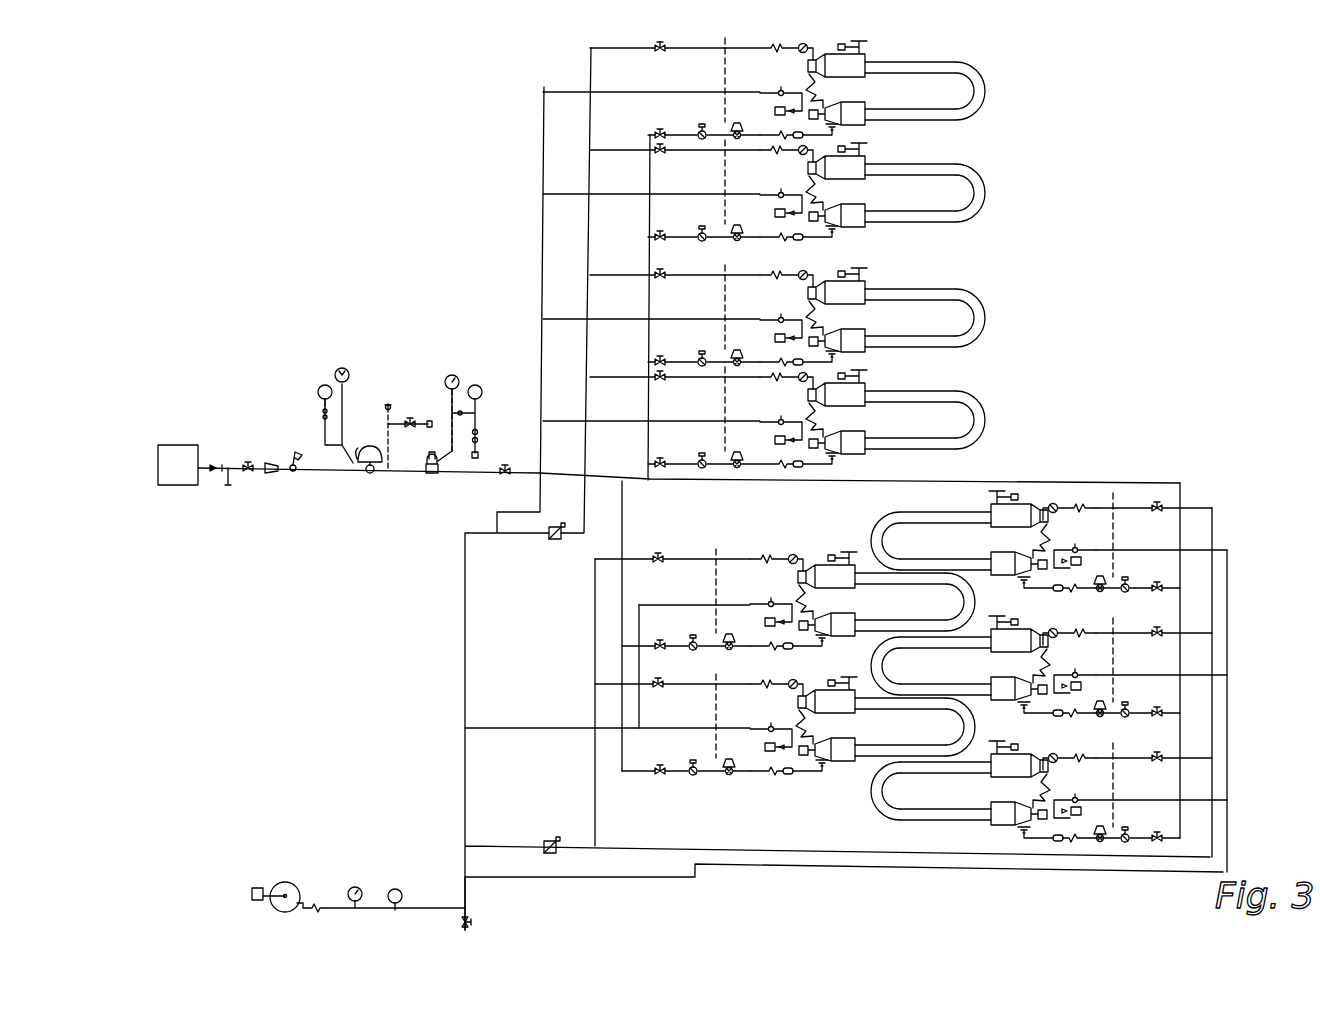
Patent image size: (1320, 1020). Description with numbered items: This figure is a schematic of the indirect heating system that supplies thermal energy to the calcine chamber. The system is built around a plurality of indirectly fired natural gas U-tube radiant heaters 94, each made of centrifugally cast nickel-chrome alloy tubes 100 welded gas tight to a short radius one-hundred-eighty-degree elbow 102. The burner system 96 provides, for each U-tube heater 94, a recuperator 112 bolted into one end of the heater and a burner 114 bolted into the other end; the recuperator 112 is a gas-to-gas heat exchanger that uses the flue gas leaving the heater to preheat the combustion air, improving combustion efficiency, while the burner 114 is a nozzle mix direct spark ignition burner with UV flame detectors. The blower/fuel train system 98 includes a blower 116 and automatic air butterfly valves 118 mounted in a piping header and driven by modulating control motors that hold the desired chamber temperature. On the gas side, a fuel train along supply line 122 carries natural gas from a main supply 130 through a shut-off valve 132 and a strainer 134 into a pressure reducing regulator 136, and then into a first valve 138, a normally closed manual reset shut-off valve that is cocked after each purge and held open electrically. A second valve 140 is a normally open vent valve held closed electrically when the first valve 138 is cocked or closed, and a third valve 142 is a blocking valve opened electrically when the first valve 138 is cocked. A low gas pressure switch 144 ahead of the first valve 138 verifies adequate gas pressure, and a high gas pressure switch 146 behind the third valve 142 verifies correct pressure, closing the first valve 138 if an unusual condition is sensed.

The U-tube radiant heater 94 is at (919, 466).
The burner system 96 is at (1040, 502).
The blower/fuel train system 98 is at (225, 638).
The tube 100 is at (945, 62).
The short radius 180° elbow 102 is at (993, 108).
The recuperator 112 is at (806, 77).
The burner 114 is at (858, 106).
The blower 116 is at (288, 882).
The automatic air butterfly valve 118 is at (553, 540).
The supply line 122 is at (345, 481).
The main supply 130 is at (177, 445).
The shut-off valve 132 is at (248, 462).
The strainer 134 is at (272, 474).
The pressure reducing regulator 136 is at (295, 478).
The first valve 138 is at (370, 475).
The second valve 140 is at (409, 421).
The third valve 142 is at (431, 475).
The low gas pressure switch 144 is at (320, 412).
The high gas pressure switch 146 is at (480, 434).